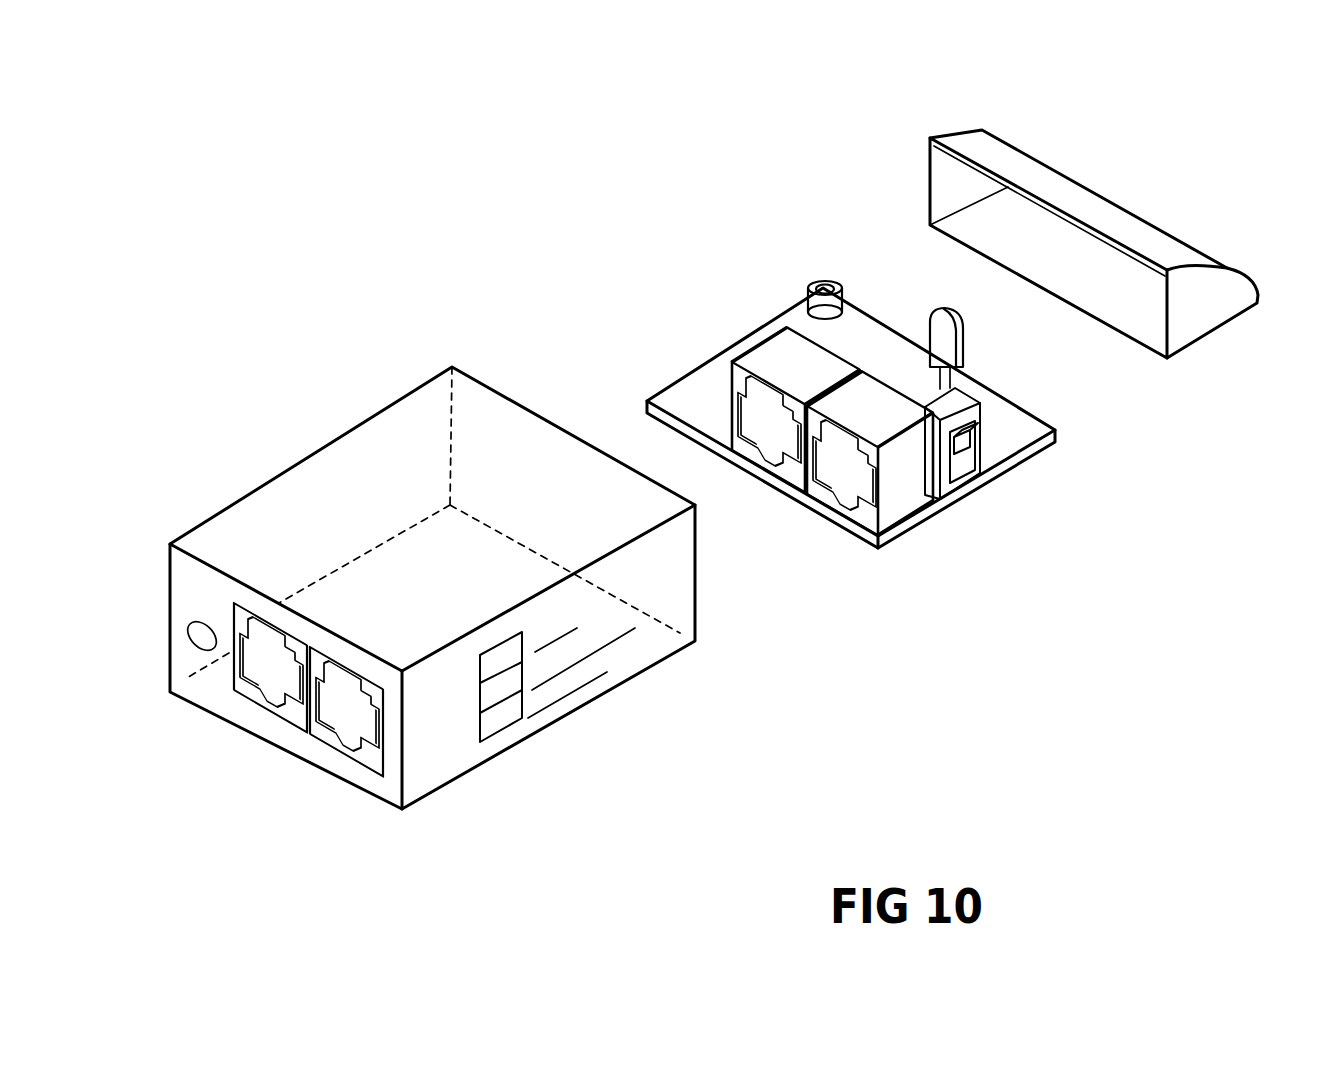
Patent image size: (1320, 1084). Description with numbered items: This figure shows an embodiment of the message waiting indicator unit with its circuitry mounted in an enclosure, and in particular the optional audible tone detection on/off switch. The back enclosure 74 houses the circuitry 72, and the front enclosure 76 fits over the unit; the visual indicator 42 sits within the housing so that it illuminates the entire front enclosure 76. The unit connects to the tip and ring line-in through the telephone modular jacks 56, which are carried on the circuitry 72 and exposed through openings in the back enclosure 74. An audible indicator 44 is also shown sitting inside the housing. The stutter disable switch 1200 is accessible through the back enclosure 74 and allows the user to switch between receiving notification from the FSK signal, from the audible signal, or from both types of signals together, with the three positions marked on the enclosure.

The visual indicator 42 is at (940, 301).
The audible indicator 44 is at (822, 282).
The telephone modular jacks 56 is at (765, 472).
The circuitry 72 is at (1052, 455).
The back enclosure 74 is at (511, 741).
The front enclosure 76 is at (1098, 184).
The stutter disable switch 1200 is at (980, 404).